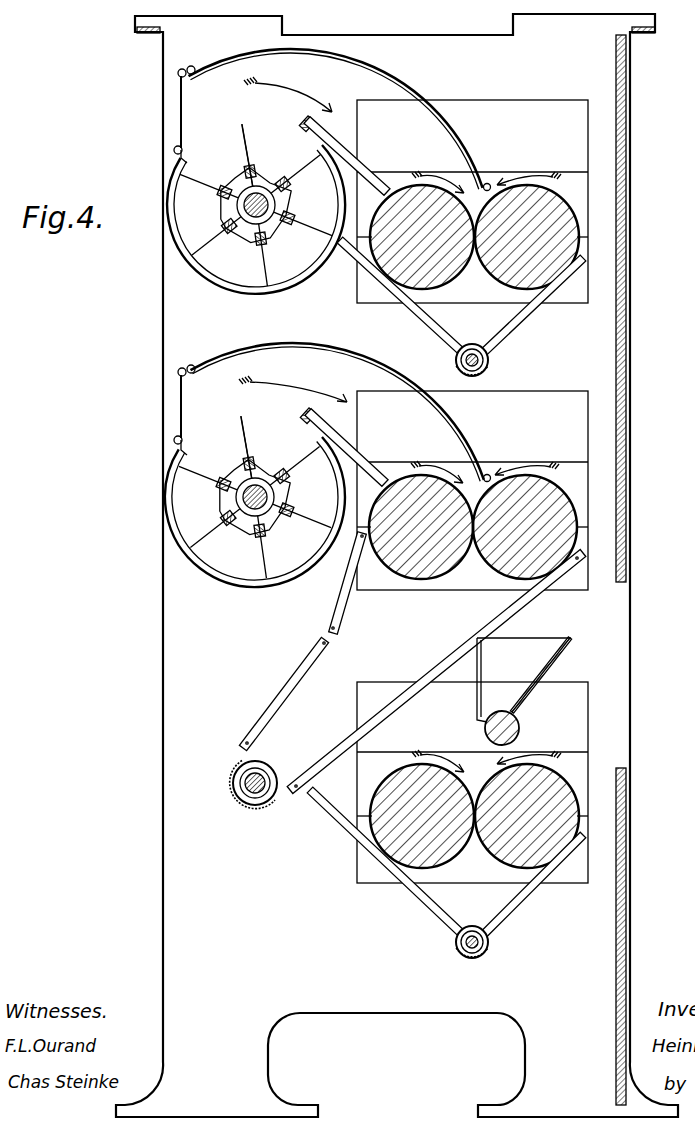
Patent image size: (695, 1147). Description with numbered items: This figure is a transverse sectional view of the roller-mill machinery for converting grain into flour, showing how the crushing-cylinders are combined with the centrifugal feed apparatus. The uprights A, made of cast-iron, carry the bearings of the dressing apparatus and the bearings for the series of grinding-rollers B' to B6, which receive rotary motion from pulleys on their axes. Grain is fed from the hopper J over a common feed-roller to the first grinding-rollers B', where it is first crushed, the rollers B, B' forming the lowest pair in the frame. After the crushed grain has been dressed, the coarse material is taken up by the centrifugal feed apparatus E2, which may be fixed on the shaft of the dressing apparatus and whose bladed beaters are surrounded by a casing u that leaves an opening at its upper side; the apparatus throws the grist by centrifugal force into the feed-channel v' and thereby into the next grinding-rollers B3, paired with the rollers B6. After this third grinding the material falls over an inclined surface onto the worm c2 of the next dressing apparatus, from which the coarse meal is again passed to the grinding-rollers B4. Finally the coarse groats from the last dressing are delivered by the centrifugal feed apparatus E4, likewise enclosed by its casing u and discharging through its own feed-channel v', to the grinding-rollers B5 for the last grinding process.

The uprights A is at (397, 565).
The grinding-rollers B is at (527, 809).
The grinding-rollers B' is at (422, 809).
The grinding-rollers B3 is at (525, 520).
The grinding-rollers B4 is at (527, 230).
The grinding-rollers B5 is at (422, 230).
The grinding-rollers B6 is at (421, 520).
The centrifugal feed apparatus E2 is at (282, 493).
The centrifugal feed apparatus E4 is at (284, 195).
The casing u is at (255, 377).
The feed-channel v' is at (332, 265).
The worm c2 is at (261, 777).
The hopper J is at (524, 691).